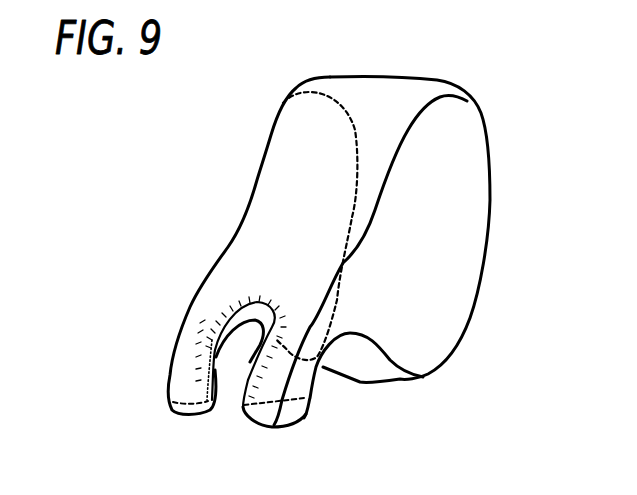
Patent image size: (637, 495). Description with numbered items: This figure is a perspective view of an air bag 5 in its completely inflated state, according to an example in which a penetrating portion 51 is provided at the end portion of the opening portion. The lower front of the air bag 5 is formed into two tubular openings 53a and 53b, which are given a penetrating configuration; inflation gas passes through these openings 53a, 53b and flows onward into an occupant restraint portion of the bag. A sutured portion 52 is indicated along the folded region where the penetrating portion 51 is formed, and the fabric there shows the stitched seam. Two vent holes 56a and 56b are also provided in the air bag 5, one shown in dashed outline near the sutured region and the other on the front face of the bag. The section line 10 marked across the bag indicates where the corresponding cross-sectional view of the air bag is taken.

The air bag 5 is at (507, 132).
The line 10— 10 is at (155, 337).
The penetrating portion 51 is at (232, 370).
The sutured portion 52 is at (225, 313).
The opening 53a is at (170, 413).
The opening 53b is at (306, 418).
The vent hole 56a is at (242, 293).
The vent hole 56b is at (351, 309).